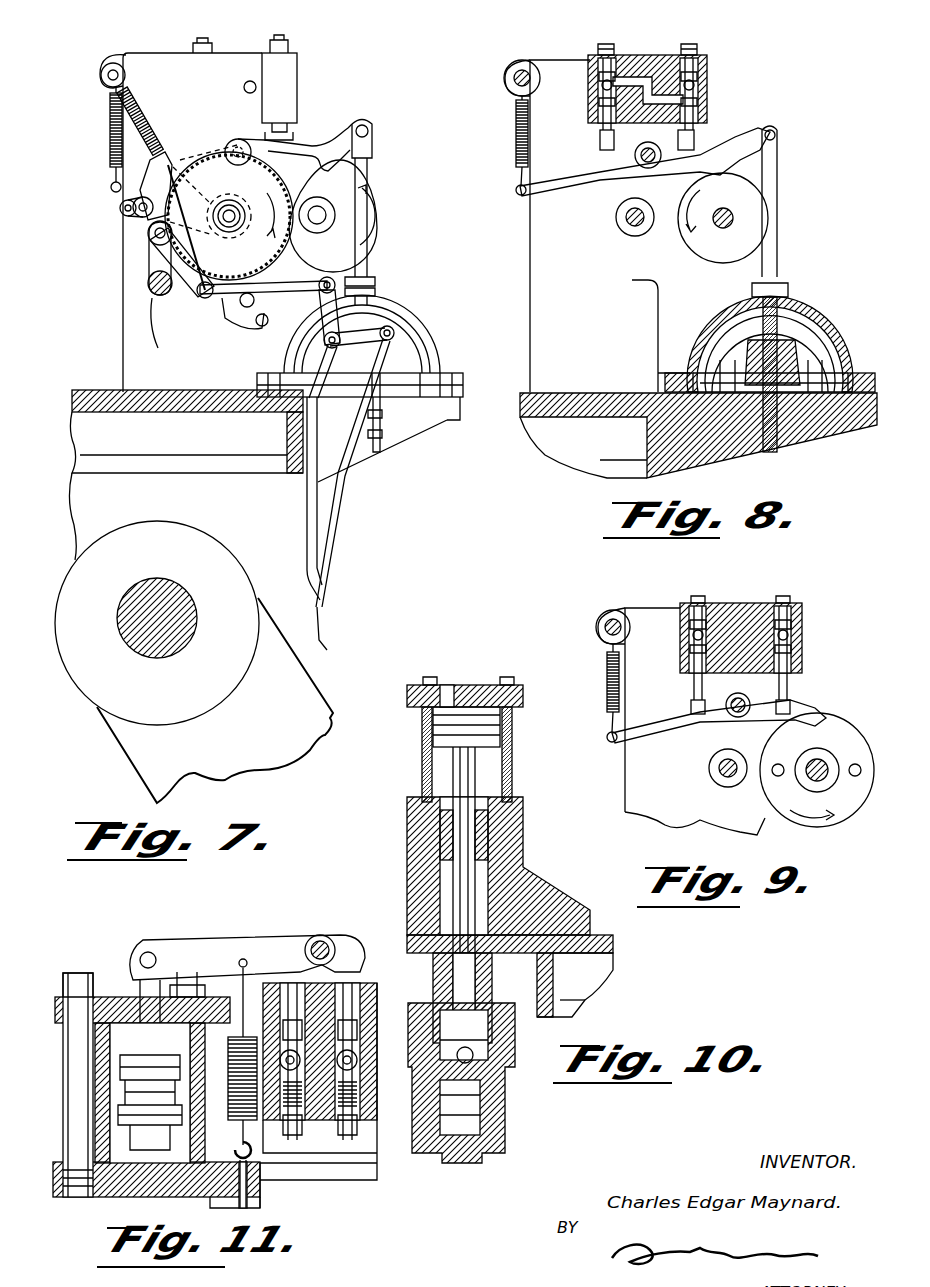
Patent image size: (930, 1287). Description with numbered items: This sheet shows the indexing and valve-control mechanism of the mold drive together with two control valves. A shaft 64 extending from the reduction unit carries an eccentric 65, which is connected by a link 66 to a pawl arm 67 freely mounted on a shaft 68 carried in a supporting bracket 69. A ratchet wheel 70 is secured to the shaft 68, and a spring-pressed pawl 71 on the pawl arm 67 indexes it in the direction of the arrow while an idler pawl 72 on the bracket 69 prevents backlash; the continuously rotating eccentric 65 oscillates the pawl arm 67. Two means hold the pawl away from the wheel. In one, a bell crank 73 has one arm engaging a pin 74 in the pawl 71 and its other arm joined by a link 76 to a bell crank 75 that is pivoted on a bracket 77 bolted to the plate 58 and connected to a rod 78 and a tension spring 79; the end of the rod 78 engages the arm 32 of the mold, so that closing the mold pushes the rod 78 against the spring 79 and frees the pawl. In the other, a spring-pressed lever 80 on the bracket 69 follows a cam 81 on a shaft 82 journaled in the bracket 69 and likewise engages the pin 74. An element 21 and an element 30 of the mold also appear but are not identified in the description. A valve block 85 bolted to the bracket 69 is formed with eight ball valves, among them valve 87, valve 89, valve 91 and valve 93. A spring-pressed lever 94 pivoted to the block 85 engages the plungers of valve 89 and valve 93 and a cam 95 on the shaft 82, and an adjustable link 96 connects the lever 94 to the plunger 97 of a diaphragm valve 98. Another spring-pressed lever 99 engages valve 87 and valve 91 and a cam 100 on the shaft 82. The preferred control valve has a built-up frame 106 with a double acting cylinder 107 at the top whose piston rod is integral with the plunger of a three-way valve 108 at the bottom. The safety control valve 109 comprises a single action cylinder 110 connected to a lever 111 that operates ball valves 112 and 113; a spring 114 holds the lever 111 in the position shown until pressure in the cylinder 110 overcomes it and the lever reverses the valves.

In FIG. 7, the wheel 21 is at (193, 505).
In FIG. 7, the shaft 30 is at (152, 640).
In FIG. 7, the arm 32 is at (298, 702).
In FIG. 7, the plate 58 is at (190, 400).
In FIG. 8, the plate 58 is at (663, 432).
In FIG. 10, the plate 58 is at (612, 955).
In FIG. 7, the shaft 64 is at (188, 288).
In FIG. 7, the eccentric 65 is at (148, 288).
In FIG. 7, the link 66 is at (150, 258).
In FIG. 7, the pawl arm 67 is at (135, 215).
In FIG. 7, the shaft 68 is at (236, 226).
In FIG. 8, the shaft 68 is at (640, 232).
In FIG. 9, the shaft 68 is at (720, 772).
In FIG. 7, the supporting bracket 69 is at (140, 90).
In FIG. 8, the supporting bracket 69 is at (552, 338).
In FIG. 9, the supporting bracket 69 is at (645, 760).
In FIG. 7, the ratchet wheel 70 is at (248, 180).
In FIG. 7, the spring-pressed pawl 71 is at (165, 150).
In FIG. 7, the idler pawl 72 is at (232, 300).
In FIG. 7, the bell crank 73 is at (192, 296).
In FIG. 7, the pin 74 is at (128, 205).
In FIG. 7, the bell crank 75 is at (378, 300).
In FIG. 7, the link 76 is at (290, 345).
In FIG. 7, the bracket 77 is at (305, 490).
In FIG. 7, the rod 78 is at (338, 515).
In FIG. 7, the tension spring 79 is at (352, 472).
In FIG. 7, the spring-pressed lever 80 is at (300, 140).
In FIG. 7, the cam 81 is at (368, 212).
In FIG. 7, the shaft 82 is at (368, 252).
In FIG. 8, the shaft 82 is at (720, 232).
In FIG. 9, the shaft 82 is at (805, 772).
In FIG. 7, the valve block 85 is at (288, 70).
In FIG. 8, the valve block 85 is at (637, 62).
In FIG. 9, the valve block 85 is at (732, 615).
In FIG. 9, the valve 87 is at (698, 600).
In FIG. 8, the valve 89 is at (605, 50).
In FIG. 9, the valve 91 is at (782, 600).
In FIG. 8, the valve 93 is at (690, 50).
In FIG. 8, the spring-pressed lever 94 is at (737, 132).
In FIG. 8, the cam 95 is at (687, 243).
In FIG. 8, the adjustable link 96 is at (780, 192).
In FIG. 8, the plunger 97 is at (807, 337).
In FIG. 8, the diaphragm valve 98 is at (842, 340).
In FIG. 9, the spring-pressed lever 99 is at (797, 702).
In FIG. 9, the cam 100 is at (847, 742).
In FIG. 10, the built-up frame 106 is at (420, 885).
In FIG. 10, the double acting cylinder 107 is at (463, 690).
In FIG. 10, the three-way valve 108 is at (507, 1087).
In FIG. 11, the safety control valve 109 is at (262, 1193).
In FIG. 11, the single action cylinder 110 is at (125, 1122).
In FIG. 11, the lever 111 is at (220, 935).
In FIG. 11, the valve 112 is at (293, 935).
In FIG. 11, the valve 113 is at (360, 978).
In FIG. 11, the spring 114 is at (228, 1103).